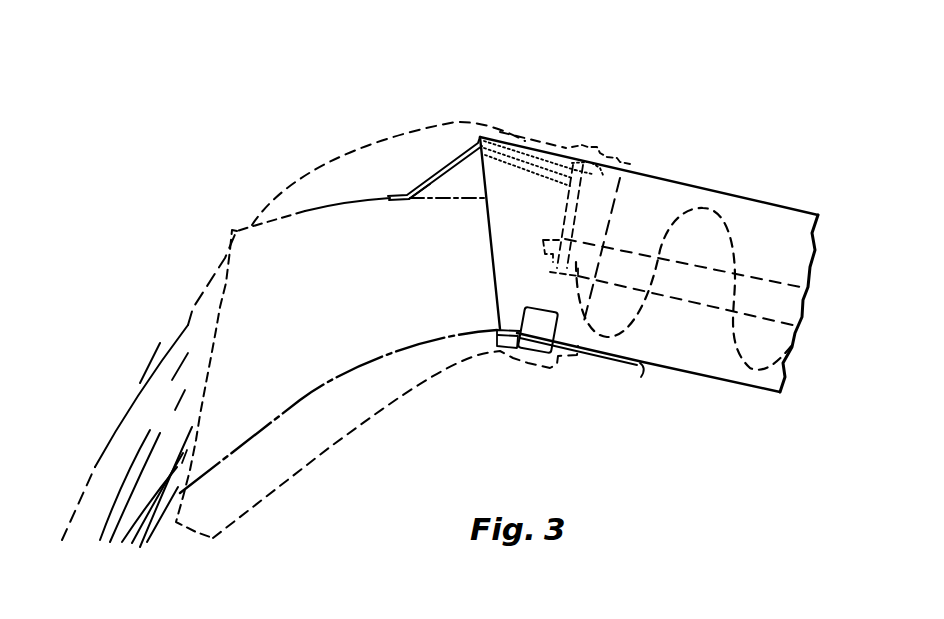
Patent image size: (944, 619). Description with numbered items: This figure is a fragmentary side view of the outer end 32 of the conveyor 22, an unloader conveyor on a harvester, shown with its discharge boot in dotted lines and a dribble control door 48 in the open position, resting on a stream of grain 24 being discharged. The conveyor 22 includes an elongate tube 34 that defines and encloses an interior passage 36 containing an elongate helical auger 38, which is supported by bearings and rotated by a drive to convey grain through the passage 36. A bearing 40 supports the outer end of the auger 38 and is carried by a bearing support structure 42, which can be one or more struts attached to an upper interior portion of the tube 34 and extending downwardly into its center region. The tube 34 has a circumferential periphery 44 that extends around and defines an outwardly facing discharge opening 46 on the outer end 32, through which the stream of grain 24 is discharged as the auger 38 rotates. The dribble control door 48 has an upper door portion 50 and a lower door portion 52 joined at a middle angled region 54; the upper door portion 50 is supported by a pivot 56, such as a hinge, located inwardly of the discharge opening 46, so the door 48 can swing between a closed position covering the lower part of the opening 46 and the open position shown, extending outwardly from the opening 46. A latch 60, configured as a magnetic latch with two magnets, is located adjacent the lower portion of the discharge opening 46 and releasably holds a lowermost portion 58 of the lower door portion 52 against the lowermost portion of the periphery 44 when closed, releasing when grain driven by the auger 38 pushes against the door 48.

The conveyor 22 is at (768, 203).
The stream of grain 24 is at (158, 348).
The outer end 32 is at (497, 137).
The elongate tube 34 is at (819, 216).
The interior passage 36 is at (780, 270).
The elongate helical auger 38 is at (735, 358).
The bearing 40 is at (562, 256).
The bearing support structure 42 is at (611, 190).
The circumferential periphery 44 is at (500, 231).
The discharge opening 46 is at (338, 371).
The dribble control door 48 is at (434, 167).
The upper door portion 50 is at (518, 158).
The lower door portion 52 is at (415, 191).
The middle angled region 54 is at (480, 137).
The pivot 56 is at (611, 190).
The lowermost portion 58 is at (388, 198).
The latch 60 is at (505, 348).